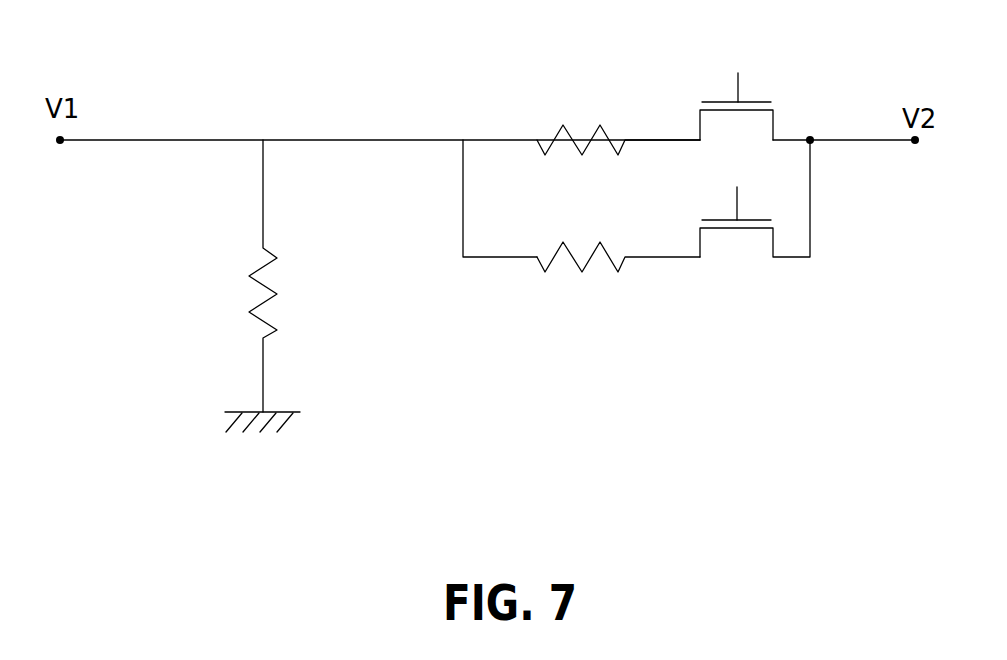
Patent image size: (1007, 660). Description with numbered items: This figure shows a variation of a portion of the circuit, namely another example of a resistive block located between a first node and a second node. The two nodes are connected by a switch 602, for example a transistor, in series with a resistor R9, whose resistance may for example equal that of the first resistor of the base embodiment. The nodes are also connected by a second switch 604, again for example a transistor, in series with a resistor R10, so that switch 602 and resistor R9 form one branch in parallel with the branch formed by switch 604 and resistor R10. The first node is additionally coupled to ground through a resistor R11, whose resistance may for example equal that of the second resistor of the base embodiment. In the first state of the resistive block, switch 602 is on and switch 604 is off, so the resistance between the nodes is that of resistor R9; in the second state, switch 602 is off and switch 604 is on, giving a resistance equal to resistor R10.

The switch 602 is at (758, 95).
The switch 604 is at (758, 258).
The resistor R9 is at (618, 122).
The resistor R10 is at (618, 275).
The resistor R11 is at (280, 286).